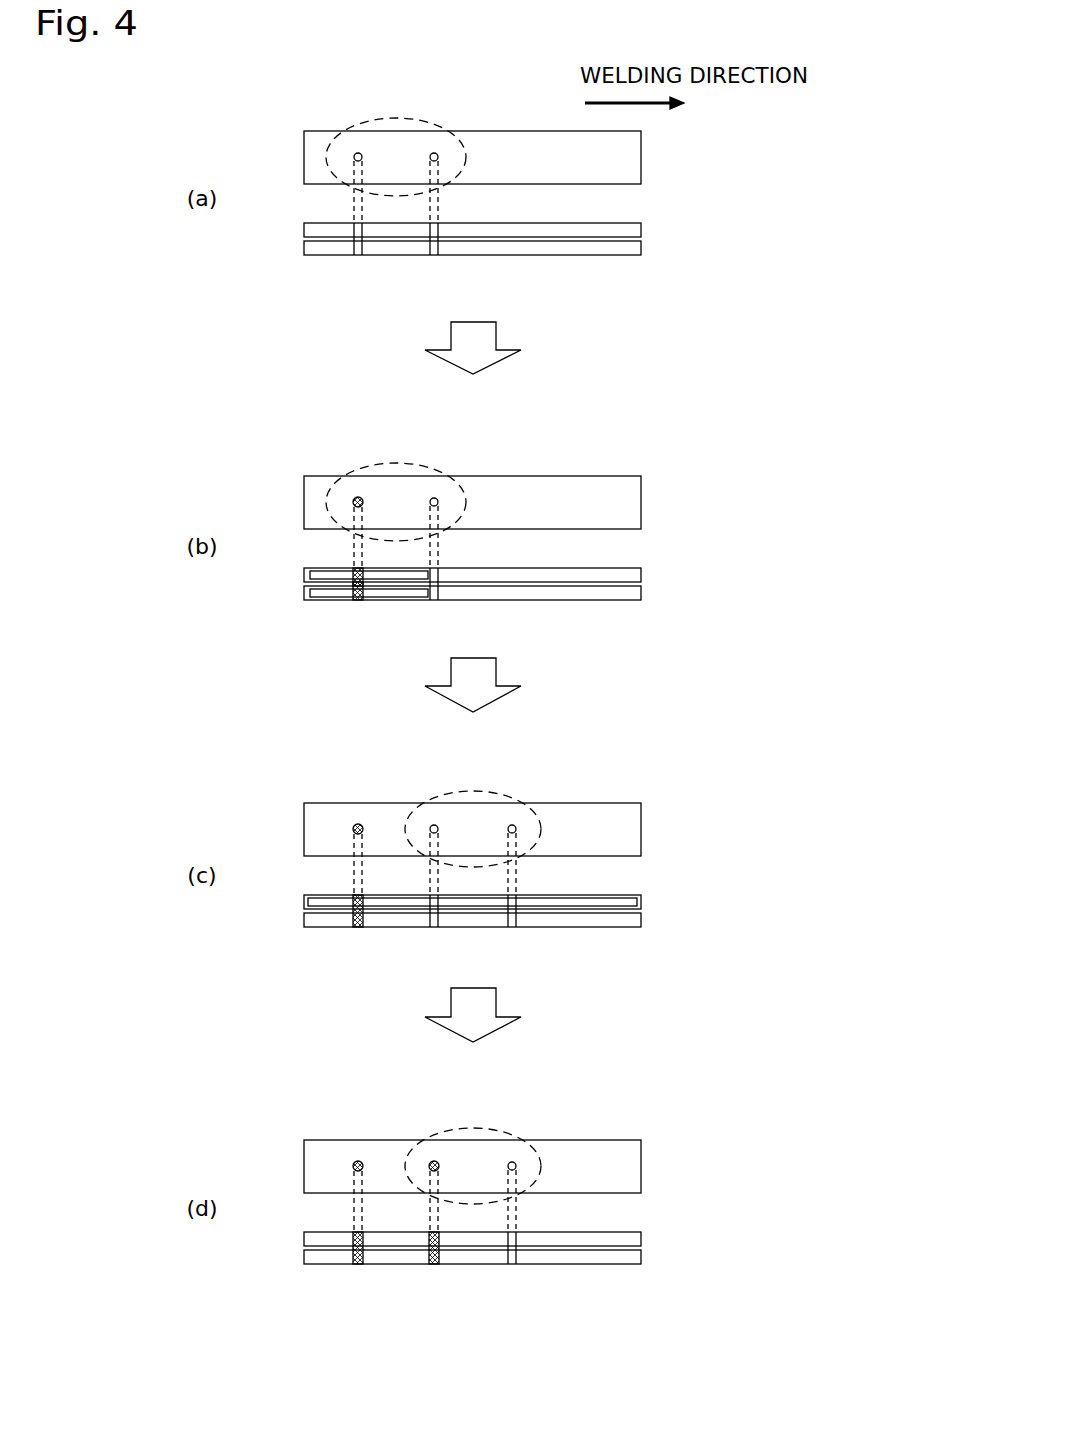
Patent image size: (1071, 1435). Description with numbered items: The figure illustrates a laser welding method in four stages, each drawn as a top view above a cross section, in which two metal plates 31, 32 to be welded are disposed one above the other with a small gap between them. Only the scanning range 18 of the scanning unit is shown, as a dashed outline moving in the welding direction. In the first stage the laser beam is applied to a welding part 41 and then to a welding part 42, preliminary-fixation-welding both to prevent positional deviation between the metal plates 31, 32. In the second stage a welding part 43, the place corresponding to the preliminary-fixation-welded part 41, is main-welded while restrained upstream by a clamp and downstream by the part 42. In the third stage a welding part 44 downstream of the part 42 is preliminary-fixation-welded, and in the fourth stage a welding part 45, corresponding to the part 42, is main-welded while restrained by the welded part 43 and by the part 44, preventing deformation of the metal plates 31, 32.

The scanning range 18 is at (471, 132).
The metal plate 31 is at (641, 157).
The metal plate 32 is at (641, 255).
The welding part 41 is at (358, 152).
The welding part 42 is at (434, 152).
The welding part 43 is at (358, 496).
The welding part 44 is at (512, 824).
The welding part 45 is at (434, 1160).